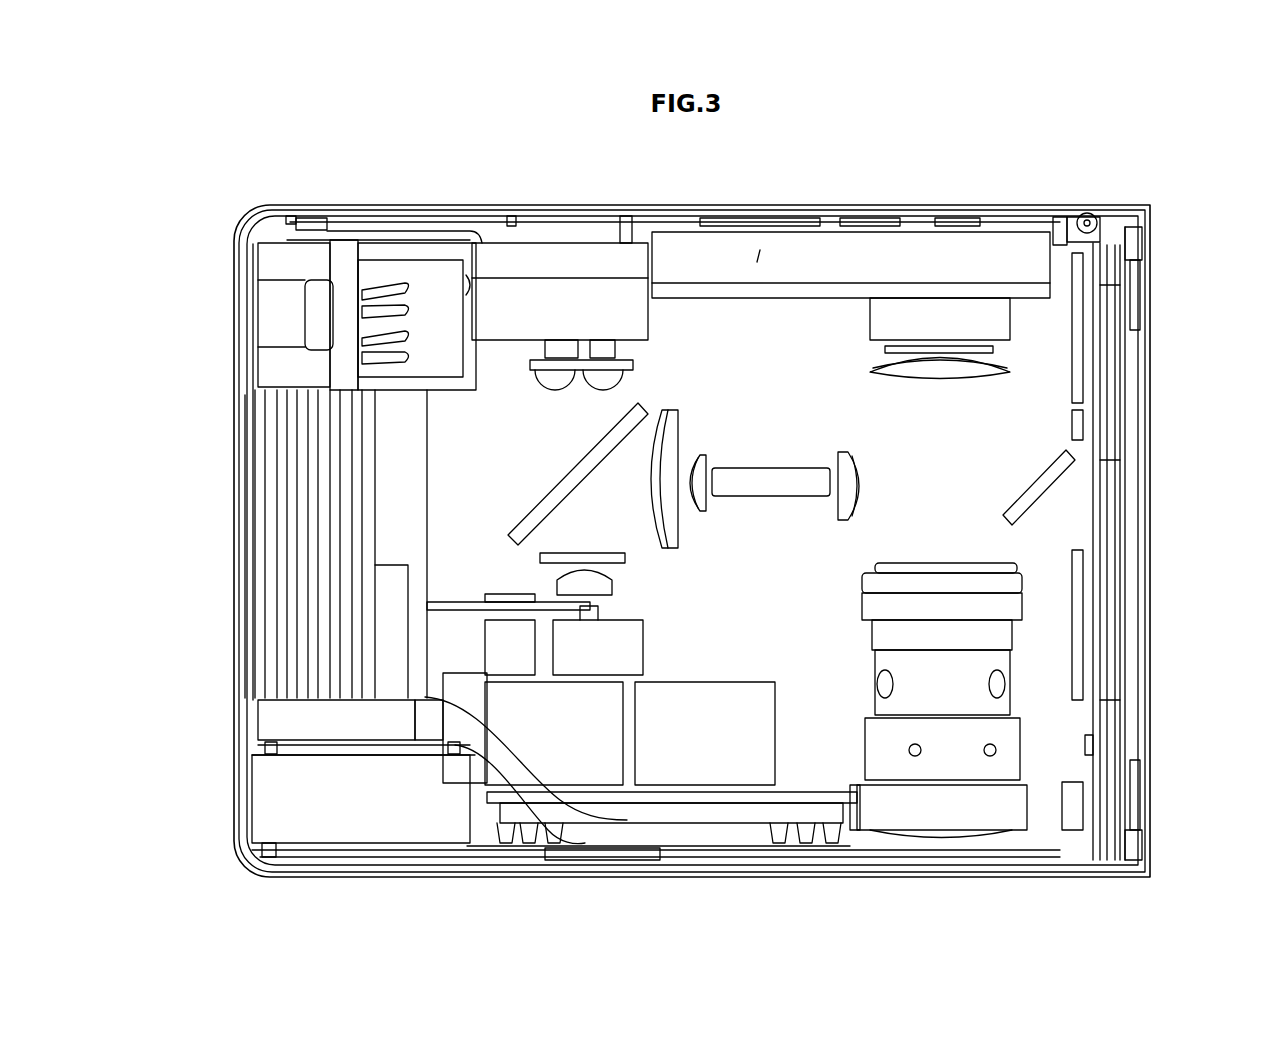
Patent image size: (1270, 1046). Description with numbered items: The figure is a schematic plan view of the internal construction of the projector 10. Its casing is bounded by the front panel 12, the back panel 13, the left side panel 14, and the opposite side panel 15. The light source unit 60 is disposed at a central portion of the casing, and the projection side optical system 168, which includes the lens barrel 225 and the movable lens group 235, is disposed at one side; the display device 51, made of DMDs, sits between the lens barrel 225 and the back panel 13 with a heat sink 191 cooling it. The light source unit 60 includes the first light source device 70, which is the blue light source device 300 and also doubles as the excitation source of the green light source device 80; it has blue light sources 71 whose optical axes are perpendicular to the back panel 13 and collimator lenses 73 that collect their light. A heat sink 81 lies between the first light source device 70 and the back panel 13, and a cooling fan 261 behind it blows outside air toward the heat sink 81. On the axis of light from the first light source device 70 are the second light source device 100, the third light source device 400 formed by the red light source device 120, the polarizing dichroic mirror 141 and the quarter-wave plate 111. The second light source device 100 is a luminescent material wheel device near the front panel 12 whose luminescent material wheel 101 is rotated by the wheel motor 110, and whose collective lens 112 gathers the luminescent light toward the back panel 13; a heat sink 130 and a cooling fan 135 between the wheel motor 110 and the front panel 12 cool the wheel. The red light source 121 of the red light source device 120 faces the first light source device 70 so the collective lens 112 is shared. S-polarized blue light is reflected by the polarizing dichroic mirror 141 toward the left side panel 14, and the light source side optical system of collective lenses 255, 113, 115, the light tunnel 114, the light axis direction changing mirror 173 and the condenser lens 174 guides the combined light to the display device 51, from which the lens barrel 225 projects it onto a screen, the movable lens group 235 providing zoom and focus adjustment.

The projector 10 is at (1180, 187).
The front panel 12 is at (282, 873).
The back panel 13 is at (318, 216).
The left side panel 14 is at (1150, 340).
The left side housing 15 is at (245, 397).
The display device 51 is at (990, 335).
The light source unit 60 is at (666, 360).
The first light source device 70 is at (506, 230).
The green light source device 80 is at (506, 230).
The blue light source device 300 is at (538, 307).
The heat sink 81 is at (532, 352).
The blue light sources 71 is at (557, 347).
The collimator lenses 73 is at (603, 375).
The cooling fan 261 is at (630, 258).
The heat sink 191 is at (760, 250).
The collective lens 113 is at (700, 452).
The light tunnel 114 is at (790, 477).
The collective lens 115 is at (845, 455).
The condenser lens 174 is at (940, 362).
The collective lens 255 is at (680, 523).
The light axis direction changing mirror 173 is at (1047, 477).
The movable lens group 235 is at (1025, 650).
The projection side optical system 168 is at (963, 695).
The lens barrel 225 is at (970, 800).
The heat sink 130 is at (268, 722).
The second light source device 100 is at (536, 536).
The polarizing dichroic mirror 141 is at (465, 622).
The wheel motor 110 is at (513, 652).
The quarter-wave plate 111 is at (550, 572).
The luminescent material wheel 101 is at (565, 610).
The collective lens 112 is at (605, 760).
The cooling fan 135 is at (648, 681).
The red light source 121 is at (665, 772).
The third light source device 400 is at (683, 855).
The red light source device 120 is at (700, 812).